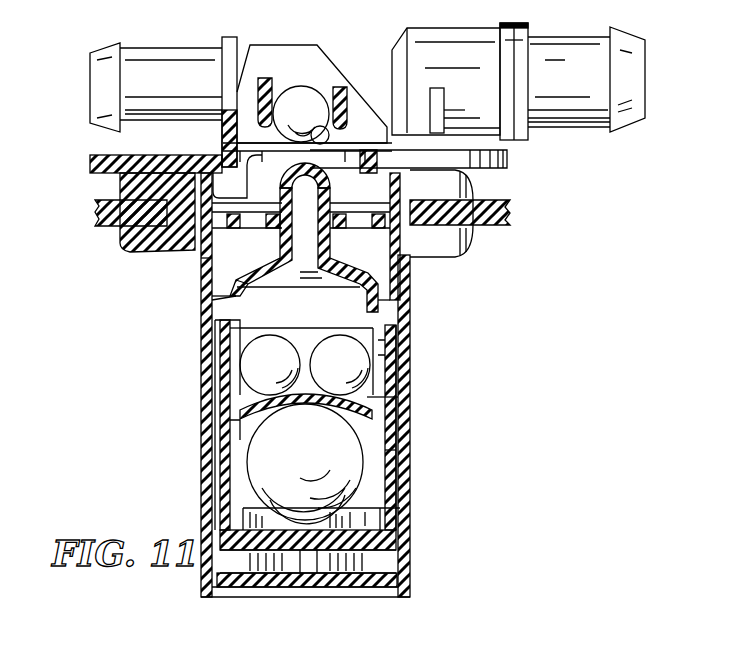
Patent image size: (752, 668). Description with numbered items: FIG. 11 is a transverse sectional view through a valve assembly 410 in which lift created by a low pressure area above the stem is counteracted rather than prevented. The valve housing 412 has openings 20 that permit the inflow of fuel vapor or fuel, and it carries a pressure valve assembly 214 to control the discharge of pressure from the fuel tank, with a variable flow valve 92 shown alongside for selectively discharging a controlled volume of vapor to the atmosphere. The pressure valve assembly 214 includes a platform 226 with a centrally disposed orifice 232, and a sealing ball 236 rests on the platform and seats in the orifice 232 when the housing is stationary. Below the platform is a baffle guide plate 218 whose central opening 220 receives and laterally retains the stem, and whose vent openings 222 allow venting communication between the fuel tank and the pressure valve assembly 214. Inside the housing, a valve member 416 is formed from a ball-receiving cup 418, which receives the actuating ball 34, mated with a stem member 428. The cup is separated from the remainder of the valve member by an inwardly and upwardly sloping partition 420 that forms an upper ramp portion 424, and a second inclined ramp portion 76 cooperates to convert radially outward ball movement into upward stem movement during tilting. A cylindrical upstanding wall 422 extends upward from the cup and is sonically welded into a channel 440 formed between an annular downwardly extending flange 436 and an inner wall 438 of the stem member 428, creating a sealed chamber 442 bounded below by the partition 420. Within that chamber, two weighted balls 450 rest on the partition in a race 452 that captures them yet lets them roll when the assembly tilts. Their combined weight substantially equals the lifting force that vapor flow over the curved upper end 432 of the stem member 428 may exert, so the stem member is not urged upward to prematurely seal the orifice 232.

The variable flow valve 92 is at (552, 30).
The pressure valve assembly 214 is at (284, 75).
The orifice 232 is at (322, 141).
The sealing ball 236 is at (318, 121).
The upper end of stem member 432 is at (333, 172).
The platform 226 is at (237, 157).
The baffle guide plate 218 is at (168, 250).
The openings 20 is at (408, 263).
The valve assembly 410 is at (430, 290).
The valve housing 412 is at (182, 321).
The valve member 416 is at (220, 291).
The central opening 220 is at (298, 222).
The vent openings 222 is at (240, 267).
The stem member 428 is at (222, 286).
The flange 436 is at (216, 339).
The channel 440 is at (228, 345).
The inner wall 438 is at (226, 345).
The sealed chamber 442 is at (257, 302).
The upstanding wall 422 is at (382, 332).
The race 452 is at (398, 397).
The partition 420 is at (377, 426).
The weighted balls 450 is at (284, 367).
The actuating ball 34 is at (316, 464).
The upper ramp portion 424 is at (223, 443).
The ball-receiving cup 418 is at (392, 468).
The second inclined ramp portion 76 is at (388, 506).